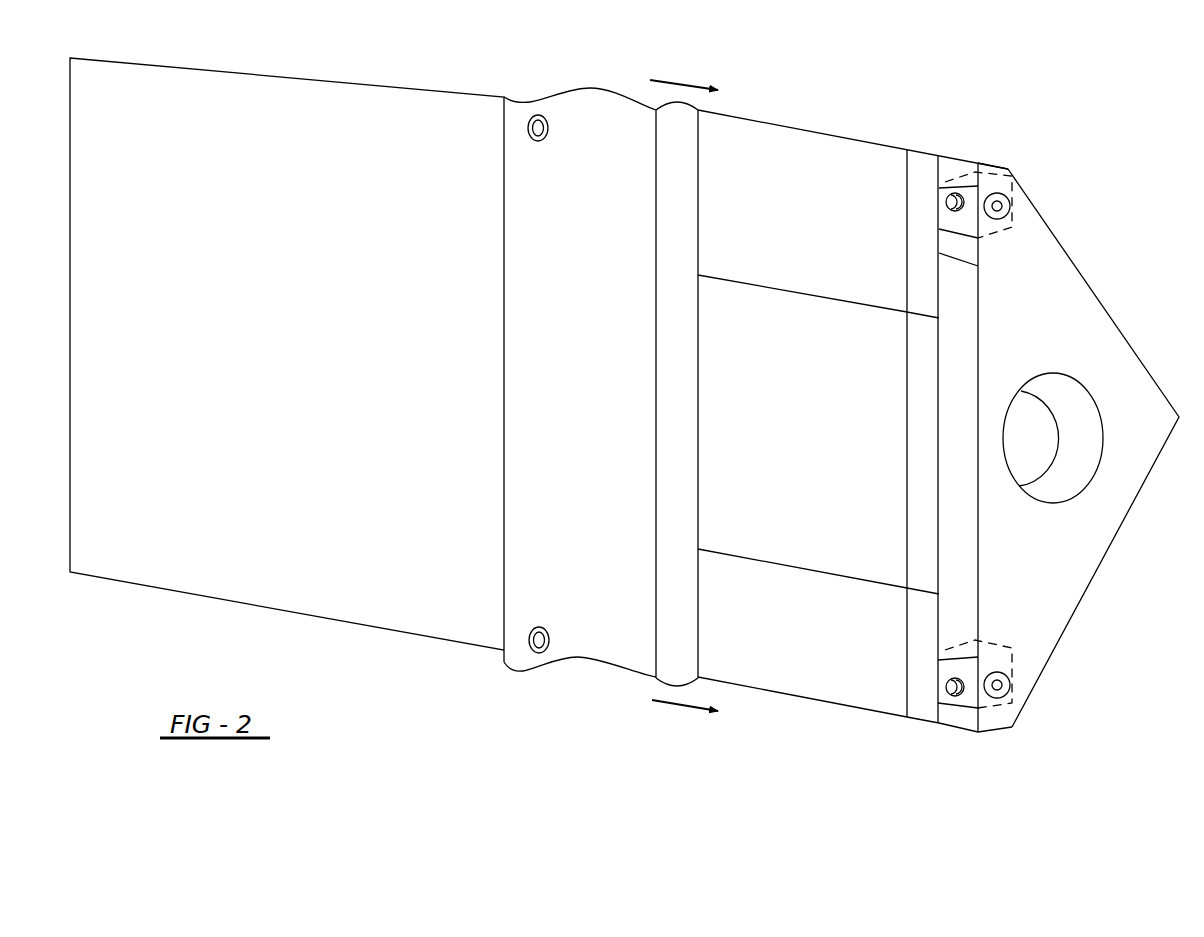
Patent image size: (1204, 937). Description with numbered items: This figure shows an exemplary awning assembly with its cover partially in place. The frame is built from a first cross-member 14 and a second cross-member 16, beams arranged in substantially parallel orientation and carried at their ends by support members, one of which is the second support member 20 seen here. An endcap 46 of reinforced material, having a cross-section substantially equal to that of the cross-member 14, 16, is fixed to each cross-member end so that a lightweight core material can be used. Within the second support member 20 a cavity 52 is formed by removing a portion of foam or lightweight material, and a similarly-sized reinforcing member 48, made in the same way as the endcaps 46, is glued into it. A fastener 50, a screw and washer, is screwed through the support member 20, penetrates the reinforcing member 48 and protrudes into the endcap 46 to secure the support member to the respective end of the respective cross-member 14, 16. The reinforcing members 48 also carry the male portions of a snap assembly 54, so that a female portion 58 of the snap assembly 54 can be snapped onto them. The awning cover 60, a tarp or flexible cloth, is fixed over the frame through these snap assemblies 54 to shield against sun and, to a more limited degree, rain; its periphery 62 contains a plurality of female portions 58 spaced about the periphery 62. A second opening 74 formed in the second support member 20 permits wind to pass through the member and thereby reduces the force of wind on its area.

The first cross-member 14 is at (820, 246).
The second cross-member 16 is at (823, 613).
The second support member 20 is at (1068, 297).
The endcap 46 is at (928, 150).
The reinforcing member 48 is at (1005, 185).
The fastener 50 is at (1014, 221).
The cavity 52 is at (958, 177).
The snap assembly 54 is at (537, 113).
The female portion 58 is at (527, 124).
The awning cover 60 is at (257, 538).
The periphery 62 is at (605, 86).
The second opening 74 is at (1033, 423).